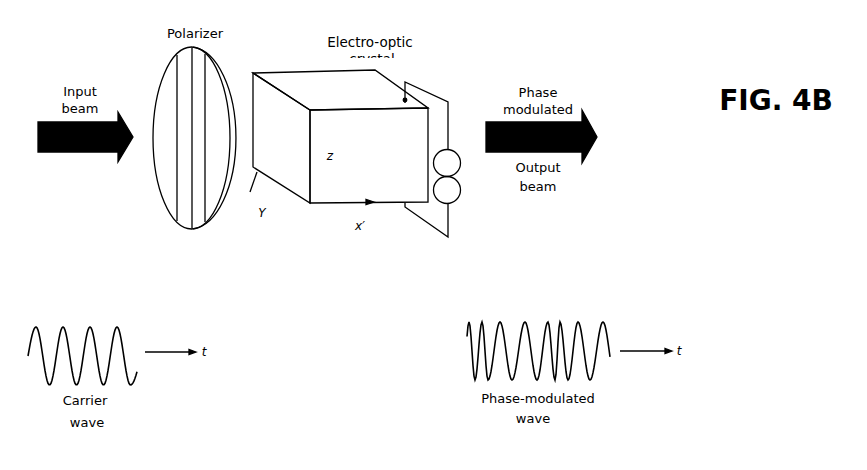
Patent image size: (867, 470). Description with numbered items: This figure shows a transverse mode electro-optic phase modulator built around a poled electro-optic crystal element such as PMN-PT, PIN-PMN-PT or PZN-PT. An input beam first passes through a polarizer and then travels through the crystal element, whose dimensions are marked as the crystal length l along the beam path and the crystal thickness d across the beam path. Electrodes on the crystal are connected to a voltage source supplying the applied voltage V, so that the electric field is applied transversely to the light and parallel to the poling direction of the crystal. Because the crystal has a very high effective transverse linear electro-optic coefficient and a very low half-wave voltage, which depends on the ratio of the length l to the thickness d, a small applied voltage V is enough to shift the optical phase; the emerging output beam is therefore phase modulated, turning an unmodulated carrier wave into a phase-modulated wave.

The applied voltage V is at (455, 177).
The crystal thickness d is at (388, 113).
The crystal length l is at (397, 88).